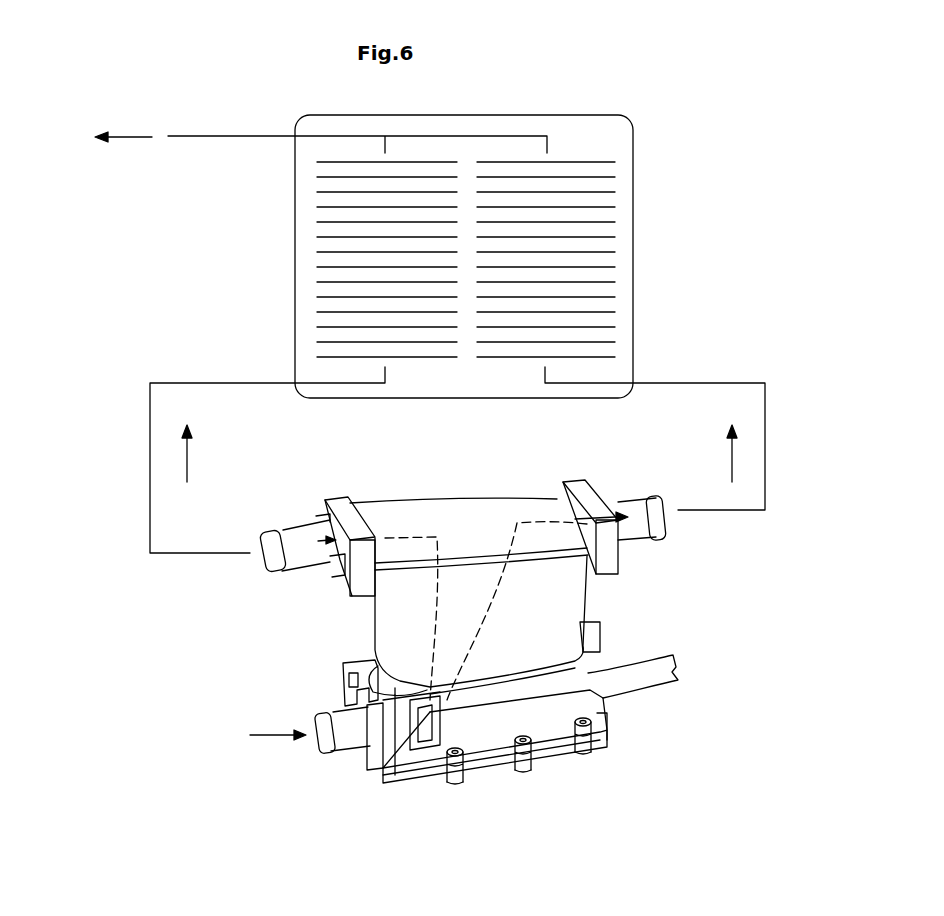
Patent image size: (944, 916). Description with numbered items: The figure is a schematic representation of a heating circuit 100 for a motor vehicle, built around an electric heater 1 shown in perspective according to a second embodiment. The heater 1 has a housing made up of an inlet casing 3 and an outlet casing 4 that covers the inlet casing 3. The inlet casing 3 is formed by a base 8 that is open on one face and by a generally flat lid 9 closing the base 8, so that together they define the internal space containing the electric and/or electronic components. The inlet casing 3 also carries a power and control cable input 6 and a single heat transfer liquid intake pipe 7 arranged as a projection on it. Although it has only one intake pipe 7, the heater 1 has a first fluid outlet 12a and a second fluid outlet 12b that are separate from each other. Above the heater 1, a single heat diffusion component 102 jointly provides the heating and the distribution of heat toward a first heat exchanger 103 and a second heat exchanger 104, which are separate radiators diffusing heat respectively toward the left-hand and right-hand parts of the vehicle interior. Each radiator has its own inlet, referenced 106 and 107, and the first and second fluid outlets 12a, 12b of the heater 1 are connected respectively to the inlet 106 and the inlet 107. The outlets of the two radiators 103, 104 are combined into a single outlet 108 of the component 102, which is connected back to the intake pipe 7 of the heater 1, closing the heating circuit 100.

The heating circuit 100 is at (599, 94).
The heat diffusion component 102 is at (633, 140).
The first heat exchanger 103 is at (335, 264).
The second heat exchanger 104 is at (590, 264).
The inlet of the first radiator 106 is at (213, 382).
The inlet of the second radiator 107 is at (700, 382).
The outlet 108 is at (237, 135).
The heater 1 is at (541, 626).
The inlet casing 3 is at (495, 776).
The outlet casing 4 is at (300, 633).
The power and control cable input 6 is at (644, 702).
The intake pipe 7 is at (348, 738).
The base 8 is at (490, 744).
The lid 9 is at (540, 756).
The first fluid outlet 12a is at (297, 534).
The second fluid outlet 12b is at (630, 505).